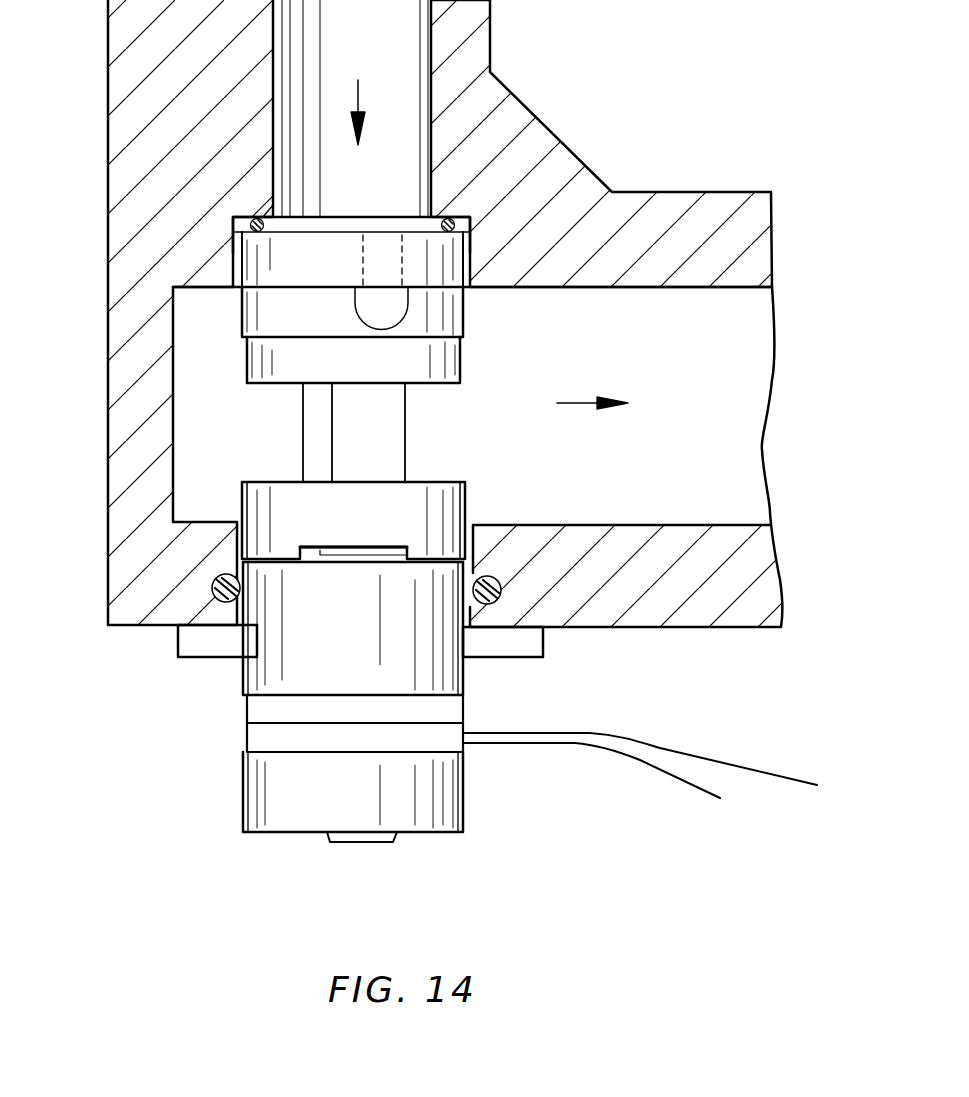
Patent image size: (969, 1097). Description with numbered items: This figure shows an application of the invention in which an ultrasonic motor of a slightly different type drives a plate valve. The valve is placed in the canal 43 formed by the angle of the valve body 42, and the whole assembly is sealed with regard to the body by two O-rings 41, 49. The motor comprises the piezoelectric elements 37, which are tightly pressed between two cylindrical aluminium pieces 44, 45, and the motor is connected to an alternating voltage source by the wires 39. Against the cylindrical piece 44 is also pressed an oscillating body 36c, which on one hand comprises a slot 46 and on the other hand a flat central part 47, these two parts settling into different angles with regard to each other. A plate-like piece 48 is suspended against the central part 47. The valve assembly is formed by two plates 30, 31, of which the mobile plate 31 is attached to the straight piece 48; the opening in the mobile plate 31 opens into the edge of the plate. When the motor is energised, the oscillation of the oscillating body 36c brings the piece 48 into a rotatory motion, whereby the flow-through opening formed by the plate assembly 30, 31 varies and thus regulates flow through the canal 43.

The plate 30 is at (258, 258).
The mobile plate 31 is at (255, 313).
The oscillating body 36c is at (480, 500).
The piezoelectric elements 37 is at (447, 740).
The wires 39 is at (715, 757).
The O-ring 41 is at (460, 213).
The valve body 42 is at (533, 143).
The canal 43 is at (421, 35).
The cylindrical aluminium piece 44 is at (265, 687).
The cylindrical aluminium piece 45 is at (258, 792).
The slot 46 is at (362, 555).
The flat central part 47 is at (383, 458).
The plate-like piece 48 is at (440, 363).
The O-ring 49 is at (488, 604).